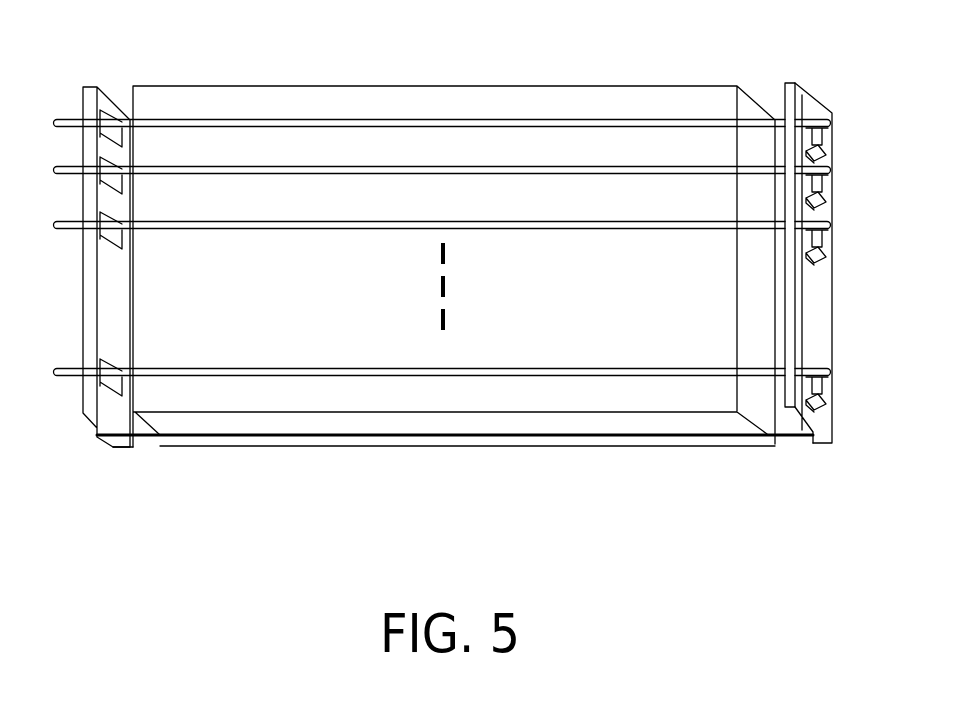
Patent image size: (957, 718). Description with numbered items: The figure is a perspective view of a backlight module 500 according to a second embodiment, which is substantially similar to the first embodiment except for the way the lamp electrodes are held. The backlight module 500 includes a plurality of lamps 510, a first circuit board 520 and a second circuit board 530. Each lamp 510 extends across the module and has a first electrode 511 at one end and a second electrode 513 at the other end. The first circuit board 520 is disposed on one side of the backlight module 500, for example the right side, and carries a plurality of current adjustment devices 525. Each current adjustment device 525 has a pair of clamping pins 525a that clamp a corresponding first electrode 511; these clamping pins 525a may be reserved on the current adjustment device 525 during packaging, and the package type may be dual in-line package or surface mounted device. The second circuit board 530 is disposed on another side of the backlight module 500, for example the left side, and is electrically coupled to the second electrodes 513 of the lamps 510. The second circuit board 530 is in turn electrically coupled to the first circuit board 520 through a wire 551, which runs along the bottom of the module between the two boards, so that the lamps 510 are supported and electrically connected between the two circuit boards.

The backlight module 500 is at (467, 259).
The lamp 510 is at (597, 120).
The first electrode 511 is at (828, 115).
The second electrode 513 is at (70, 122).
The first circuit board 520 is at (800, 85).
The current adjustment device 525 is at (817, 263).
The clamping pin 525a is at (818, 238).
The second circuit board 530 is at (100, 88).
The wire 551 is at (481, 438).